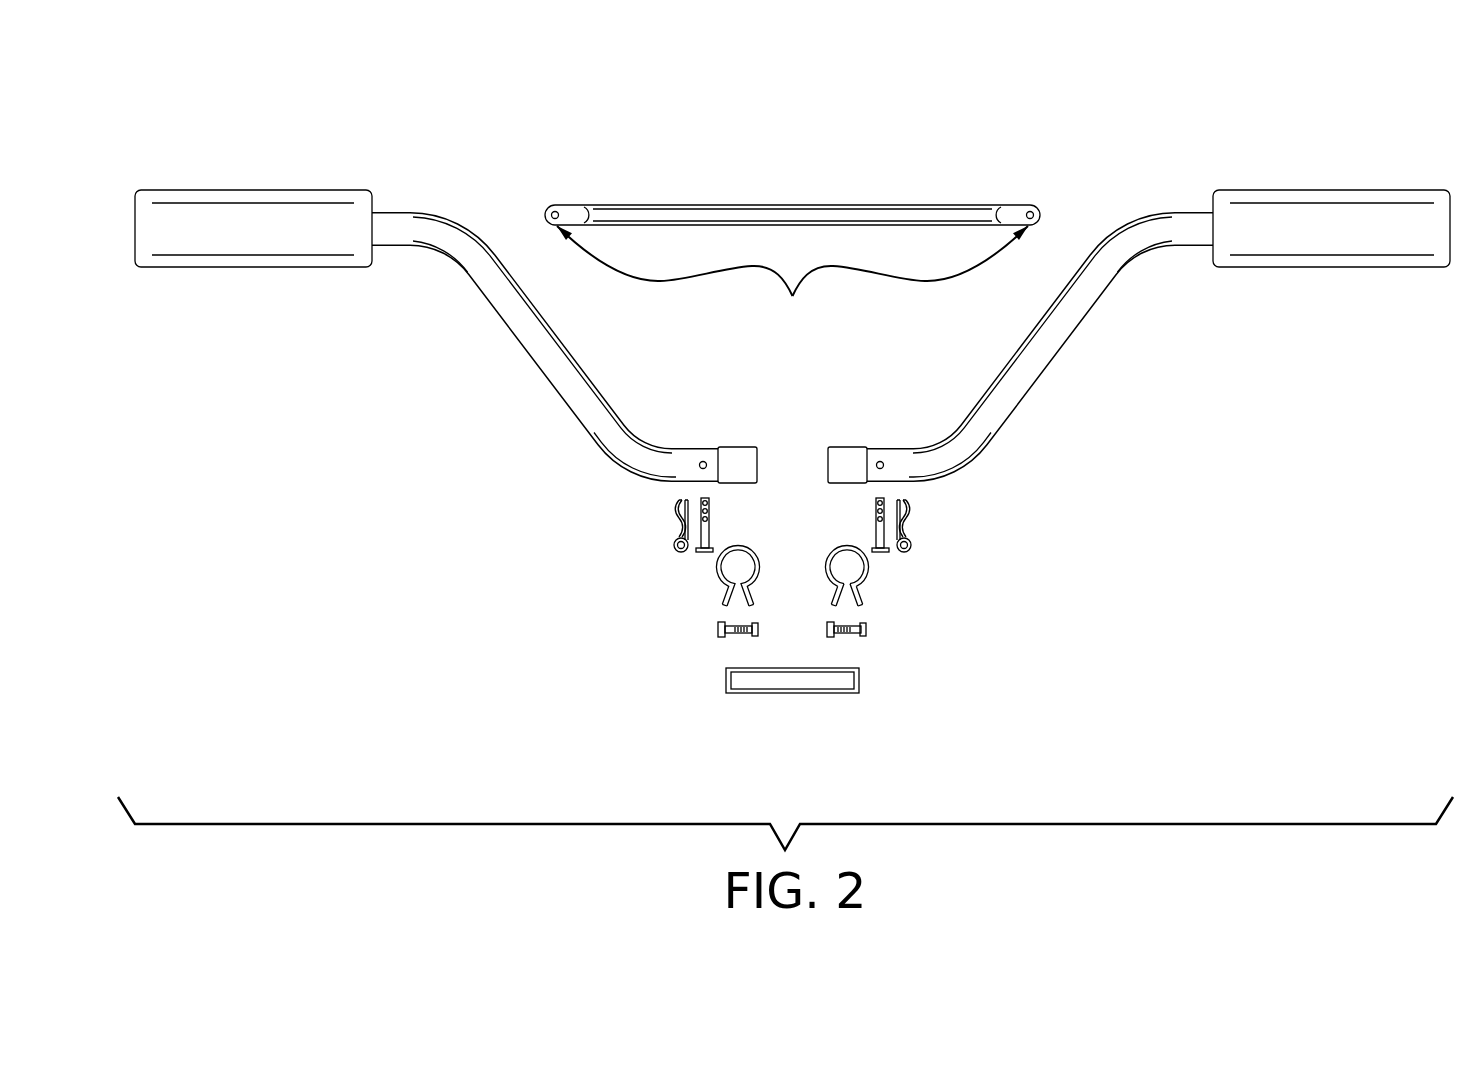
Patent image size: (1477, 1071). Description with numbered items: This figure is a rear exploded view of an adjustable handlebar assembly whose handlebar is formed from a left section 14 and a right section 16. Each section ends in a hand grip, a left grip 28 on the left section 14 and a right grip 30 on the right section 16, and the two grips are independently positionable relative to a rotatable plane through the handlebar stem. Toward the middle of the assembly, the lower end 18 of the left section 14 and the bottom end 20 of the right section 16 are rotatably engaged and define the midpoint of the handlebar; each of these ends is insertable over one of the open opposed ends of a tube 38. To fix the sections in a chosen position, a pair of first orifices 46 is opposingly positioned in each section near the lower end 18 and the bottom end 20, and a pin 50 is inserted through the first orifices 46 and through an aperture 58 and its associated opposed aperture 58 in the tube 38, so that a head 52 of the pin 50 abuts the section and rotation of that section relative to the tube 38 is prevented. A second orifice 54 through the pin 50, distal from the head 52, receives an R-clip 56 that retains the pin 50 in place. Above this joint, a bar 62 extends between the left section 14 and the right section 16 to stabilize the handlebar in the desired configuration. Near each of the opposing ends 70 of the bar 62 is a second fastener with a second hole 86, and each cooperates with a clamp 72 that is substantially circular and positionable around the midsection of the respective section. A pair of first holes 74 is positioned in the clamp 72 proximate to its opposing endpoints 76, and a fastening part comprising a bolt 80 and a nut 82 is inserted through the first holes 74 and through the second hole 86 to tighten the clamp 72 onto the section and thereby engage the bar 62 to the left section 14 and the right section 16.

The left section 14 is at (1070, 346).
The right section 16 is at (515, 346).
The lower end 18 is at (827, 432).
The bottom end 20 is at (754, 440).
The left grip 28 is at (1286, 174).
The right grip 30 is at (243, 174).
The tube 38 is at (823, 695).
The first orifices 46 is at (695, 440).
The pin 50 is at (681, 538).
The head 52 is at (699, 570).
The second orifice 54 is at (681, 506).
The R-clip 56 is at (929, 518).
The apertures 58 is at (796, 688).
The bar 62 is at (786, 189).
The opposing ends 70 is at (792, 283).
The clamp 72 is at (886, 568).
The first holes 74 is at (856, 614).
The opposing endpoints 76 is at (746, 624).
The bolt 80 is at (872, 650).
The nut 82 is at (847, 660).
The second hole 86 is at (551, 188).